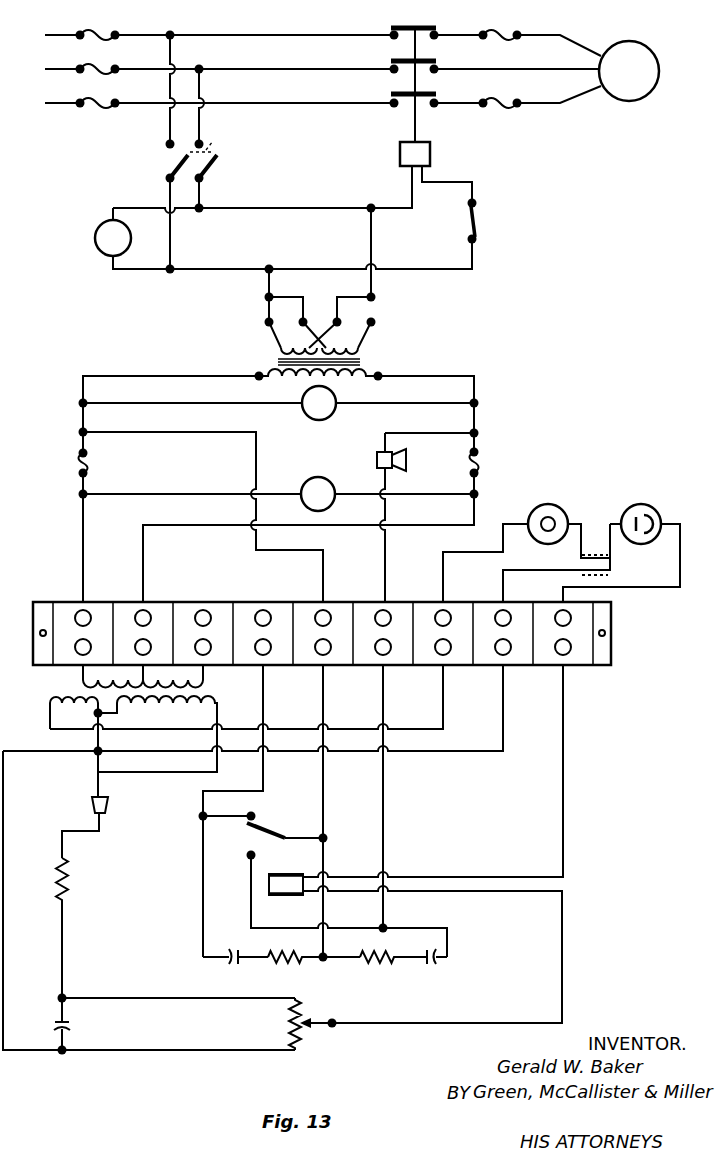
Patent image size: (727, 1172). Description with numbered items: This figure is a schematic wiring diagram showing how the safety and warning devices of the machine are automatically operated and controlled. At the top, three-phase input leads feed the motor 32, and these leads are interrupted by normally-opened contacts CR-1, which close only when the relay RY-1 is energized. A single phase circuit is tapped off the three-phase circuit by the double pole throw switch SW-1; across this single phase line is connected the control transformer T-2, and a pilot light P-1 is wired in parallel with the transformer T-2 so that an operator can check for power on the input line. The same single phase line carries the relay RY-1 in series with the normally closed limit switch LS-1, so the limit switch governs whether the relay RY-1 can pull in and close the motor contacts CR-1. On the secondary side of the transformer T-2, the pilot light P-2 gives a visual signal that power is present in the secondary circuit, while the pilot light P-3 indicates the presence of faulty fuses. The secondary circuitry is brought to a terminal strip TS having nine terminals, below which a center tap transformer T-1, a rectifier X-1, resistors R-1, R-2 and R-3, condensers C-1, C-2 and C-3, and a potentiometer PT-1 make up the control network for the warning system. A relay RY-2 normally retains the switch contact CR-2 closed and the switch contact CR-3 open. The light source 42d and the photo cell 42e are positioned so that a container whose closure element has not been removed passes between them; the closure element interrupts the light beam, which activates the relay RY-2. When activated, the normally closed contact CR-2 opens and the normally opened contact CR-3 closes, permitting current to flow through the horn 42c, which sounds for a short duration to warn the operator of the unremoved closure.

The normally-opened contacts CR-1 is at (447, 88).
The motor 32 is at (659, 71).
The relay RY-1 is at (430, 154).
The double pole throw switch SW-1 is at (218, 162).
The limit switch LS-1 is at (478, 218).
The pilot light P-1 is at (113, 232).
The control transformer T-2 is at (362, 360).
The pilot light P-2 is at (278, 403).
The pilot light P-3 is at (278, 501).
The horn 42c is at (408, 461).
The light source 42d is at (556, 505).
The photo cell 42e is at (650, 506).
The terminal strip TS is at (611, 642).
The center tap transformer T-1 is at (97, 692).
The rectifier X-1 is at (110, 804).
The switch contact CR-2 is at (276, 828).
The switch contact CR-3 is at (258, 842).
The relay RY-2 is at (268, 896).
The resistor R-1 is at (66, 887).
The condenser C-2 is at (235, 967).
The resistor R-2 is at (300, 963).
The resistor R-3 is at (396, 973).
The condenser C-3 is at (430, 967).
The condenser C-1 is at (70, 1026).
The potentiometer PT-1 is at (302, 1012).